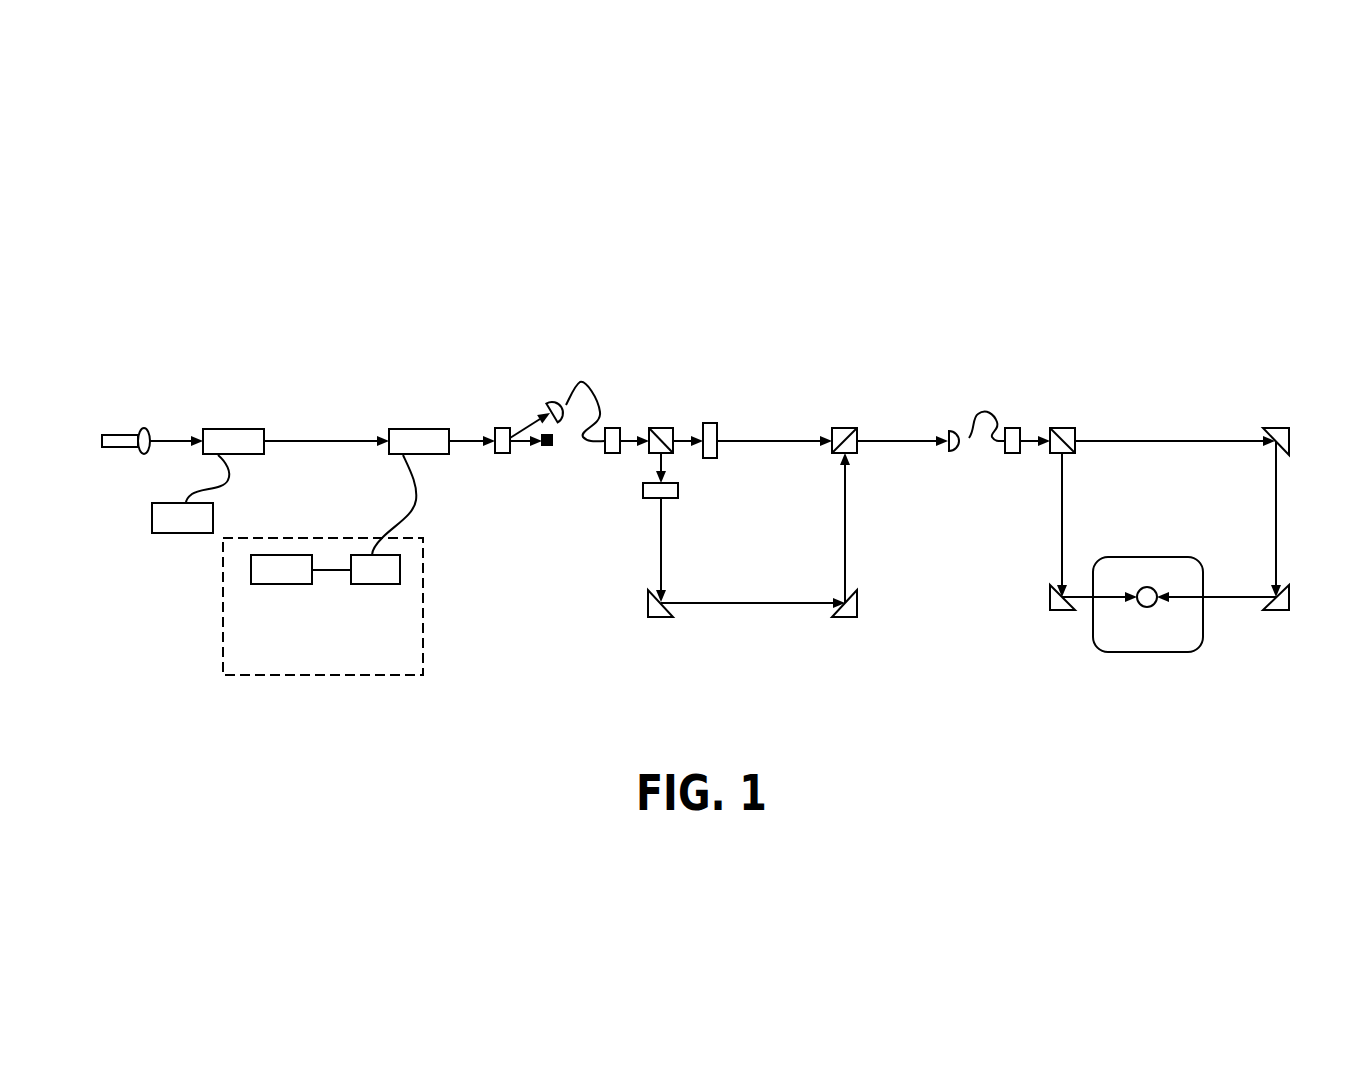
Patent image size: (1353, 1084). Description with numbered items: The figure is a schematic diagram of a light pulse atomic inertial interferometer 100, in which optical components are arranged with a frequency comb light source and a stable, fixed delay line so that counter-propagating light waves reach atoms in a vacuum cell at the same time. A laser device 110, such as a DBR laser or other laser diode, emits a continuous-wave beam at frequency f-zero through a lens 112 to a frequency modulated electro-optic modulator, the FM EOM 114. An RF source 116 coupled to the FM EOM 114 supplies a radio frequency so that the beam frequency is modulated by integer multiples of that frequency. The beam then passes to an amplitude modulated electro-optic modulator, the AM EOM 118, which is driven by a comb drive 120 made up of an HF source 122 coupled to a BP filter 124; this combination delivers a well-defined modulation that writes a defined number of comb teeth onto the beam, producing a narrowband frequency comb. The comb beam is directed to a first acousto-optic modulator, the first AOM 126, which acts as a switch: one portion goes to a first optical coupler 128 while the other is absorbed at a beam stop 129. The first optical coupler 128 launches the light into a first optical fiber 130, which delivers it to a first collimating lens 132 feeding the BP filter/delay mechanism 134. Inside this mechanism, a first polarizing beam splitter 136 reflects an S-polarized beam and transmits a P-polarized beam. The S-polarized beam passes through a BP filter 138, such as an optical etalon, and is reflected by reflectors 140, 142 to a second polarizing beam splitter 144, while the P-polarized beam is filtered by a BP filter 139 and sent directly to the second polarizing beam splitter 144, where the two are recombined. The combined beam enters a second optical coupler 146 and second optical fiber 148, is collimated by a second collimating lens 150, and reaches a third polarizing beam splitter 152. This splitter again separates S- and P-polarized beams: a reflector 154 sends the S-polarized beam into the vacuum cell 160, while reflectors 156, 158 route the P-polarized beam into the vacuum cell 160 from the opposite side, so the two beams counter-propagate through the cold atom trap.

The light pulse atomic inertial interferometer 100 is at (169, 243).
The laser device 110 is at (128, 434).
The lens 112 is at (145, 456).
The frequency modulated electro-optic modulator 114 is at (250, 455).
The radio frequency source 116 is at (180, 534).
The amplitude modulated electro-optic modulator 118 is at (432, 455).
The comb drive 120 is at (339, 690).
The high frequency source 122 is at (298, 585).
The bandpass filter 124 is at (380, 585).
The first acousto-optic modulator 126 is at (505, 427).
The first optical coupler 128 is at (550, 404).
The beam stop 129 is at (548, 447).
The first optical fiber 130 is at (596, 393).
The first collimating lens 132 is at (613, 427).
The BP filter/delay mechanism 134 is at (781, 622).
The first polarizing beam splitter 136 is at (648, 453).
The BP filter 138 is at (656, 500).
The BP filter 139 is at (707, 422).
The reflector 140 is at (647, 600).
The reflector 142 is at (860, 600).
The second polarizing beam splitter 144 is at (842, 427).
The second optical coupler 146 is at (955, 453).
The second optical fiber 148 is at (985, 410).
The second collimating lens 150 is at (1011, 427).
The third polarizing beam splitter 152 is at (1065, 427).
The reflector 154 is at (1048, 593).
The reflector 156 is at (1275, 425).
The reflector 158 is at (1292, 598).
The vacuum cell 160 is at (1150, 653).